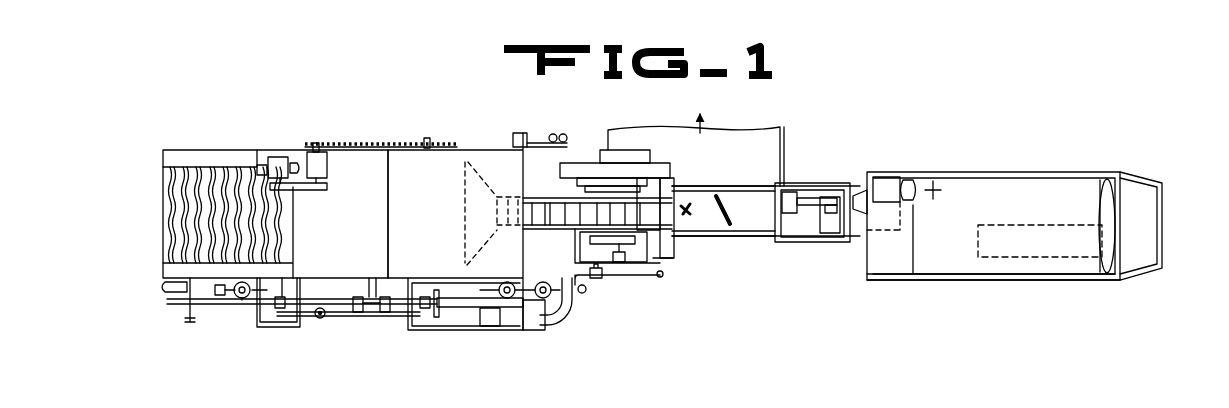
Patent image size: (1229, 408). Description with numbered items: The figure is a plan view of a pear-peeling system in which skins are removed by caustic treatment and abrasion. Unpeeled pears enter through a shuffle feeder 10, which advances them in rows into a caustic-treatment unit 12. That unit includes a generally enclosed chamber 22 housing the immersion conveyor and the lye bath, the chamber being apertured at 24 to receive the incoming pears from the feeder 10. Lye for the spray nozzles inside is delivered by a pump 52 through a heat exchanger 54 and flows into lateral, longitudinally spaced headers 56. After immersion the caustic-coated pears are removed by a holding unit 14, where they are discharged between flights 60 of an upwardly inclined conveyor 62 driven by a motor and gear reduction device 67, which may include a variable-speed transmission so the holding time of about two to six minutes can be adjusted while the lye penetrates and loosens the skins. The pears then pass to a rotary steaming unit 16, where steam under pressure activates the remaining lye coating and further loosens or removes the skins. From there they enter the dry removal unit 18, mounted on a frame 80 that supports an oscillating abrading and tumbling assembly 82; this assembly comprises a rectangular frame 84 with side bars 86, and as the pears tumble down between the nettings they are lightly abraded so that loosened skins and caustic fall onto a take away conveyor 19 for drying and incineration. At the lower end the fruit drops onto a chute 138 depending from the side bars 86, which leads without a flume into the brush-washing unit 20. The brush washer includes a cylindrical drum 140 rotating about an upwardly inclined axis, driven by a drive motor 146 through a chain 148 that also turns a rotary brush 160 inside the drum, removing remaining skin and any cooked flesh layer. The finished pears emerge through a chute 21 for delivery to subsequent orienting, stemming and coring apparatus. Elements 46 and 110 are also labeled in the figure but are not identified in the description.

The shuffle feeder 10 is at (160, 210).
The caustic-treatment unit 12 is at (384, 146).
The holding unit 14 is at (562, 188).
The rotary steaming unit 16 is at (648, 178).
The dry removal unit 18 is at (742, 238).
The take away conveyor 19 is at (770, 131).
The brush-washing unit 20 is at (1073, 172).
The chute 21 is at (1150, 196).
The enclosed chamber 22 is at (402, 224).
The aperture 24 is at (297, 206).
The drive unit 46 is at (285, 156).
The pump 52 is at (537, 329).
The heat exchanger 54 is at (340, 318).
The headers 56 is at (213, 303).
The flights 60 is at (534, 224).
The upwardly inclined conveyor 62 is at (552, 197).
The motor and gear reduction device 67 is at (590, 163).
The frame 80 is at (812, 184).
The oscillating abrading and tumbling assembly 82 is at (718, 194).
The rectangular frame 84 is at (797, 235).
The side bars 86 is at (695, 196).
The piston 110 is at (789, 190).
The chute 138 is at (858, 223).
The cylindrical drum 140 is at (958, 266).
The drive motor 146 is at (941, 190).
The chain 148 is at (860, 190).
The rotary brush 160 is at (1002, 224).